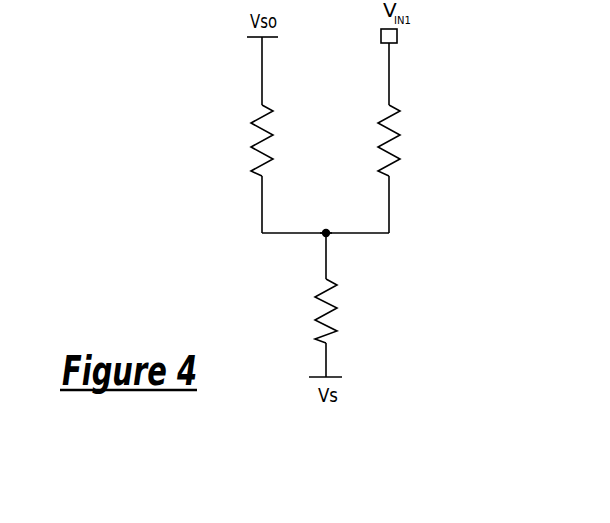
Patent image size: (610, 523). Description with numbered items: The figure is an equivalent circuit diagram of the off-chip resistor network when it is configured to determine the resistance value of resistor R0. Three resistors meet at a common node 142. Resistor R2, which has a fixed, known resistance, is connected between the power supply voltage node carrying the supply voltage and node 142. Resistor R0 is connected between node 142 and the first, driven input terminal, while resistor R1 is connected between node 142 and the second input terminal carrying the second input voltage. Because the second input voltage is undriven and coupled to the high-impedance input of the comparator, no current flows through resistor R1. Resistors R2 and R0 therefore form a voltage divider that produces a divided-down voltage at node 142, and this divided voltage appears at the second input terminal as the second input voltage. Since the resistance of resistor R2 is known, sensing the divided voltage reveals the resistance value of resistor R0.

The node 142 is at (322, 236).
The resistor R0 is at (243, 140).
The resistor R1 is at (407, 140).
The resistor R2 is at (345, 311).